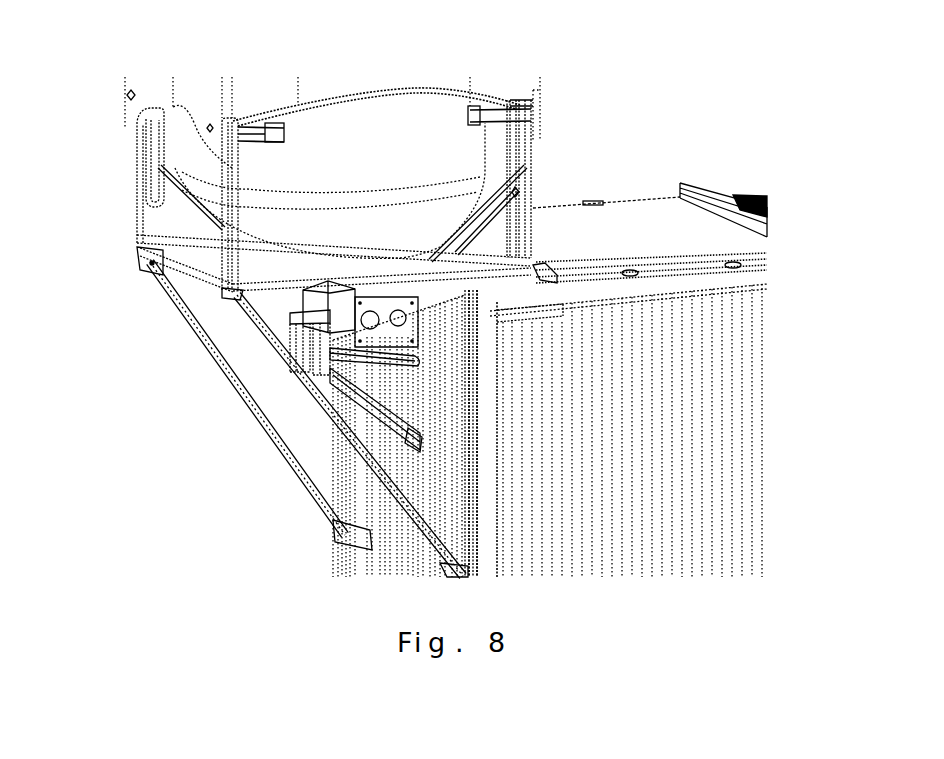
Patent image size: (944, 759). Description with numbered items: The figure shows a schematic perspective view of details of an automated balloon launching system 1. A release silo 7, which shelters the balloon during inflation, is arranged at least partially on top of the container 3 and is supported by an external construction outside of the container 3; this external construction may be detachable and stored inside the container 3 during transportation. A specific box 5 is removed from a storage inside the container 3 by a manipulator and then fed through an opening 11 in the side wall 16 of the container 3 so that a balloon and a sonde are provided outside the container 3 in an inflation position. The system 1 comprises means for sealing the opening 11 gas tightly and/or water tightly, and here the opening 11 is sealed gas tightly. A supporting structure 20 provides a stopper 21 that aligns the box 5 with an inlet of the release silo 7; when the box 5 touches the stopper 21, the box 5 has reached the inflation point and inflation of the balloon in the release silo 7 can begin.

The automated balloon launching system 1 is at (638, 167).
The container 3 is at (737, 437).
The box 5 is at (318, 306).
The release silo 7 is at (250, 173).
The opening 11 is at (182, 228).
The side wall 16 is at (357, 490).
The supporting structure 20 is at (298, 364).
The stopper 21 is at (300, 318).